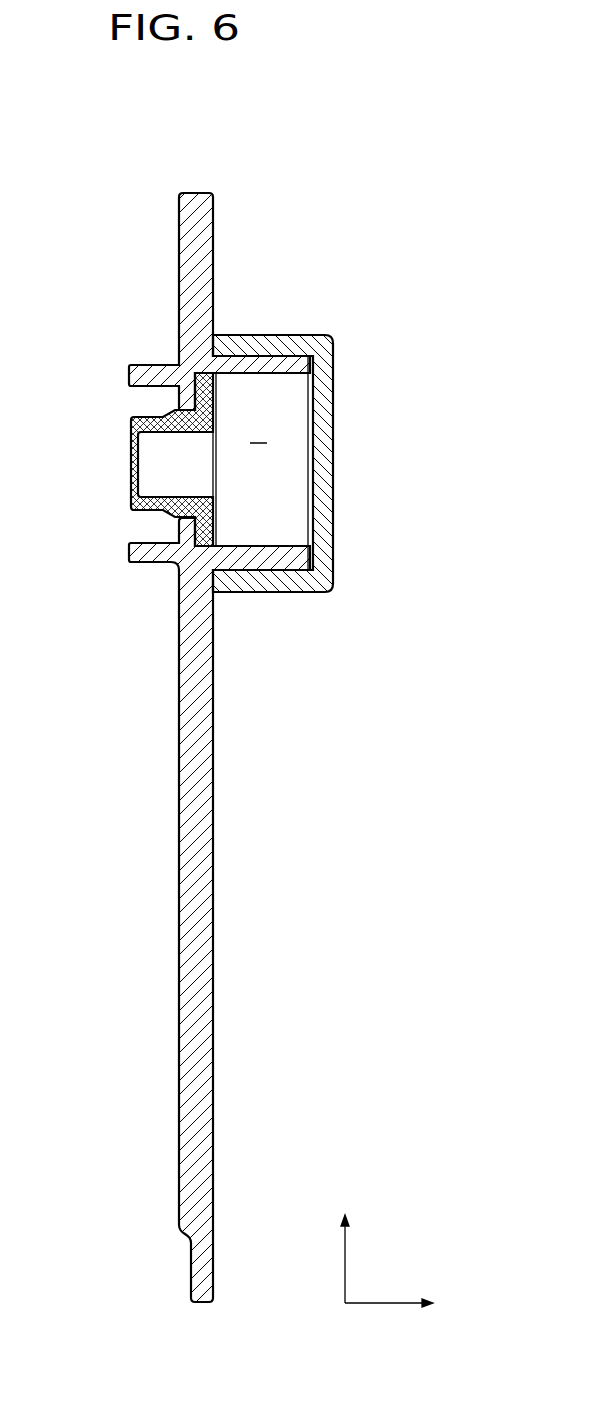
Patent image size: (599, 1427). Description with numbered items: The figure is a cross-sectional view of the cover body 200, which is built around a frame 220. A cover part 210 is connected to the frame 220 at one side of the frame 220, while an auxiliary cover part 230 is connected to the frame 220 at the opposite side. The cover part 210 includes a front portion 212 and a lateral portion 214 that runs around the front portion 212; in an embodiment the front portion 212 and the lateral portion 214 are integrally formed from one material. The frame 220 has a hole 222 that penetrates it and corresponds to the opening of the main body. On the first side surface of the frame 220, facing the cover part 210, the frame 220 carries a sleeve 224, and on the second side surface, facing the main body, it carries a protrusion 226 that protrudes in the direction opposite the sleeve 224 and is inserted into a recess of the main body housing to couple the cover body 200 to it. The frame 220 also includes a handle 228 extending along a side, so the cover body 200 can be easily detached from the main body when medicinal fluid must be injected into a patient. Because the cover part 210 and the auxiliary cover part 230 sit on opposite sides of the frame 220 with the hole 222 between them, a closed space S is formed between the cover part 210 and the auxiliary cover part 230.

The cover body 200 is at (340, 194).
The cover part 210 is at (437, 523).
The front portion 212 is at (325, 540).
The lateral portion 214 is at (263, 588).
The frame 220 is at (207, 230).
The hole 222 is at (215, 460).
The sleeve 224 is at (277, 372).
The protrusion 226 is at (132, 374).
The handle 228 is at (197, 1263).
The auxiliary cover part 230 is at (132, 465).